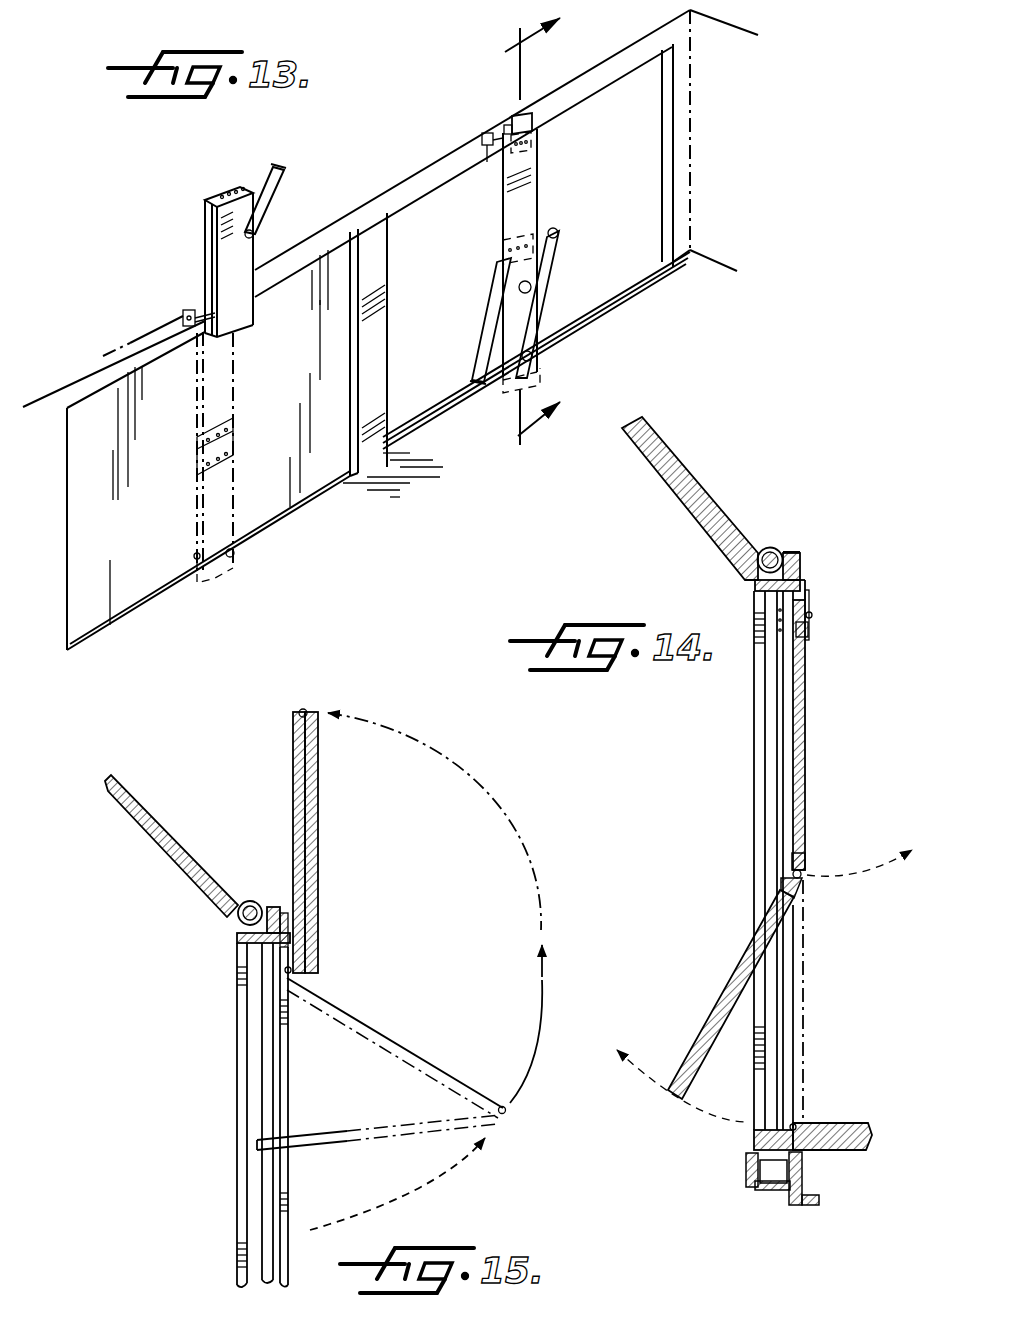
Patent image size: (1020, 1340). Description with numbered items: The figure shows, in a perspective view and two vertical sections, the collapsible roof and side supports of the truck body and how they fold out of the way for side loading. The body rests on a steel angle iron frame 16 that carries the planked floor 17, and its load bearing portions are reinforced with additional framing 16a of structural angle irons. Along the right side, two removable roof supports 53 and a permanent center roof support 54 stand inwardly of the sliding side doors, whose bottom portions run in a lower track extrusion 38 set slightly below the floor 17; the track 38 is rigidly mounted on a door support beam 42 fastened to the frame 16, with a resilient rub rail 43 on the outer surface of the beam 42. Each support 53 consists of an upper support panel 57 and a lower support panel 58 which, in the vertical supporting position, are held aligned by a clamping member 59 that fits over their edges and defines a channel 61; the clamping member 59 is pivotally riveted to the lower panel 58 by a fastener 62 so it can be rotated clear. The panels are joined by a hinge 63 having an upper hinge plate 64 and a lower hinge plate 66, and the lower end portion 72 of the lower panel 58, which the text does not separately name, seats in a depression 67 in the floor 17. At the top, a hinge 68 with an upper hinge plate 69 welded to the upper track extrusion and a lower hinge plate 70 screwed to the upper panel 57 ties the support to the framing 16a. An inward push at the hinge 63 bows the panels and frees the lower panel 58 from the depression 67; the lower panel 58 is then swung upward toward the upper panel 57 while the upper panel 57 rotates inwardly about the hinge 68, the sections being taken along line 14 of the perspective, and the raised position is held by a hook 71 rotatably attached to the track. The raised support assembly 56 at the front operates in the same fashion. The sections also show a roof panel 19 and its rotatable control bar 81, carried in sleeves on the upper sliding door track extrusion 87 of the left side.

In FIG. 13, the section line 14- 14 is at (505, 244).
In FIG. 14, the steel angle iron frame 16 is at (808, 1203).
In FIG. 13, the additional framing 16a is at (97, 356).
In FIG. 14, the additional framing 16a is at (792, 552).
In FIG. 14, the floor 17 is at (847, 1150).
In FIG. 14, the roof panel 19 is at (680, 463).
In FIG. 15, the roof panel 19 is at (145, 833).
In FIG. 14, the lower track extrusion 38 is at (753, 1137).
In FIG. 14, the door support beam 42 is at (767, 1190).
In FIG. 14, the resilient bumper or rub rail 43 is at (746, 1167).
In FIG. 13, the collapsible roof support 53 is at (411, 334).
In FIG. 14, the collapsible roof support 53 is at (814, 817).
In FIG. 15, the collapsible roof support 53 is at (403, 1063).
In FIG. 13, the permanent center roof support 54 is at (347, 389).
In FIG. 13, the removable support assembly 56 is at (200, 263).
In FIG. 13, the upper support panel 57 is at (503, 212).
In FIG. 14, the upper support panel 57 is at (806, 725).
In FIG. 15, the upper support panel 57 is at (293, 796).
In FIG. 13, the lower support panel 58 is at (480, 330).
In FIG. 14, the lower support panel 58 is at (717, 997).
In FIG. 15, the lower support panel 58 is at (318, 832).
In FIG. 13, the clamping member 59 is at (553, 250).
In FIG. 13, the channel 61 is at (553, 228).
In FIG. 13, the fastener 62 is at (531, 288).
In FIG. 13, the hinge 63 is at (503, 262).
In FIG. 14, the hinge 63 is at (792, 872).
In FIG. 15, the hinge 63 is at (303, 709).
In FIG. 14, the upper hinge plate 64 is at (793, 850).
In FIG. 14, the lower hinge plate 66 is at (780, 893).
In FIG. 13, the depression 67 is at (527, 351).
In FIG. 14, the depression 67 is at (793, 1124).
In FIG. 13, the hinge 68 is at (535, 118).
In FIG. 14, the hinge 68 is at (812, 615).
In FIG. 15, the hinge 68 is at (288, 973).
In FIG. 13, the upper hinge plate 69 is at (511, 126).
In FIG. 14, the upper hinge plate 69 is at (810, 600).
In FIG. 13, the lower hinge plate 70 is at (532, 143).
In FIG. 14, the lower hinge plate 70 is at (809, 632).
In FIG. 13, the hook 71 is at (482, 152).
In FIG. 13, the foot 72 is at (473, 362).
In FIG. 14, the rotatable control bar 81 is at (770, 547).
In FIG. 15, the rotatable control bar 81 is at (250, 900).
In FIG. 14, the upper sliding door track extrusion 87 is at (801, 572).
In FIG. 15, the upper sliding door track extrusion 87 is at (237, 960).